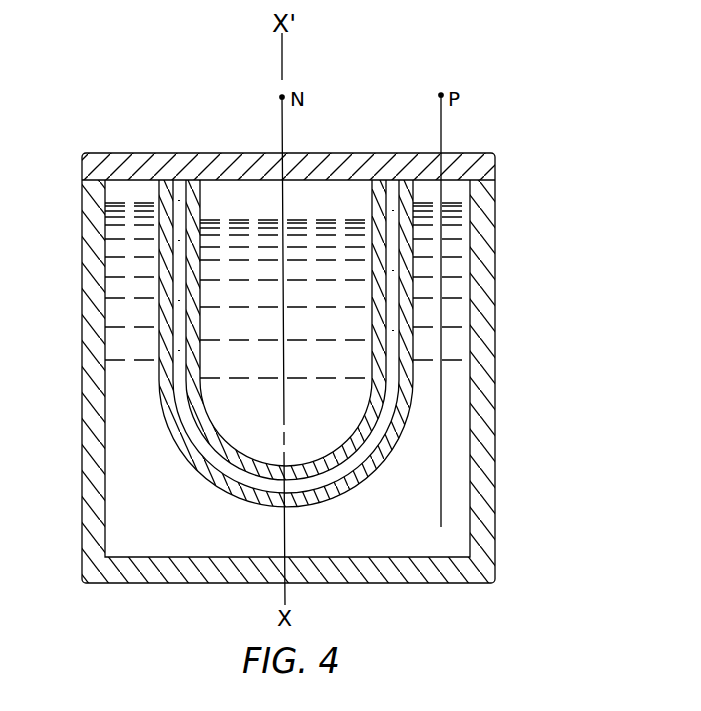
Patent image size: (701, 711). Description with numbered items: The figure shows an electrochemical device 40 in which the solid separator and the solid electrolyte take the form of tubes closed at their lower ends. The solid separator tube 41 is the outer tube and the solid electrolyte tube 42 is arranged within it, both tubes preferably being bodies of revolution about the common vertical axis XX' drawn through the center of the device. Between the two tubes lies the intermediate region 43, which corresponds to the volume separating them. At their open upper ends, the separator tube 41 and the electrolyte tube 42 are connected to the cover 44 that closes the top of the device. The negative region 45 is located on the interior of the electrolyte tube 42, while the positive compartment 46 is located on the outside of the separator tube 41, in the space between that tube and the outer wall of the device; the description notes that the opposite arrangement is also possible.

The electrochemical device 40 is at (329, 349).
The solid separator tube 41 is at (400, 445).
The solid electrolyte tube 42 is at (336, 465).
The intermediate region 43 is at (392, 356).
The cover 44 is at (463, 171).
The negative region 45 is at (286, 281).
The positive compartment 46 is at (454, 287).